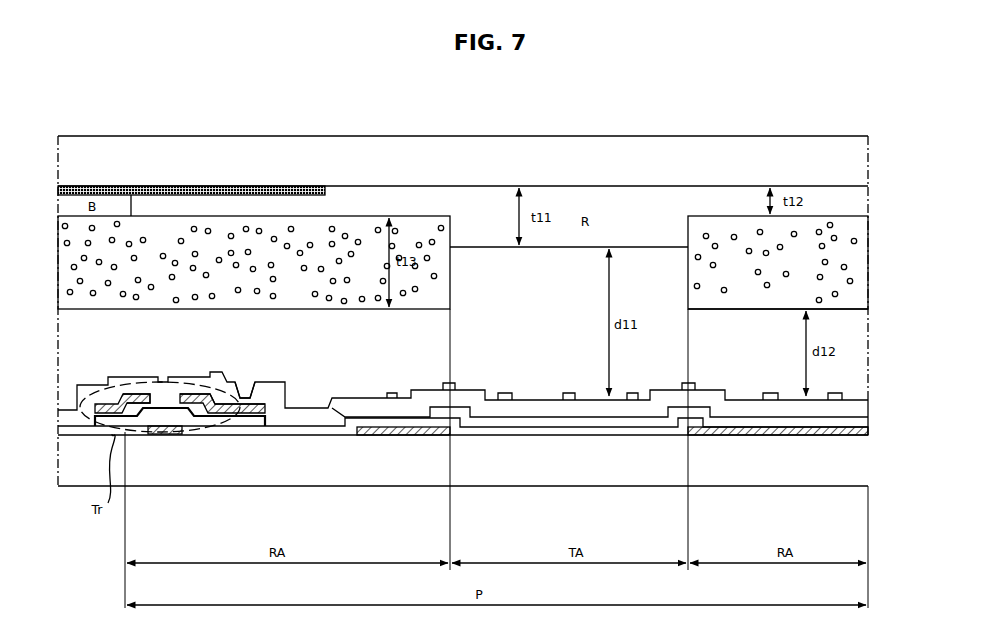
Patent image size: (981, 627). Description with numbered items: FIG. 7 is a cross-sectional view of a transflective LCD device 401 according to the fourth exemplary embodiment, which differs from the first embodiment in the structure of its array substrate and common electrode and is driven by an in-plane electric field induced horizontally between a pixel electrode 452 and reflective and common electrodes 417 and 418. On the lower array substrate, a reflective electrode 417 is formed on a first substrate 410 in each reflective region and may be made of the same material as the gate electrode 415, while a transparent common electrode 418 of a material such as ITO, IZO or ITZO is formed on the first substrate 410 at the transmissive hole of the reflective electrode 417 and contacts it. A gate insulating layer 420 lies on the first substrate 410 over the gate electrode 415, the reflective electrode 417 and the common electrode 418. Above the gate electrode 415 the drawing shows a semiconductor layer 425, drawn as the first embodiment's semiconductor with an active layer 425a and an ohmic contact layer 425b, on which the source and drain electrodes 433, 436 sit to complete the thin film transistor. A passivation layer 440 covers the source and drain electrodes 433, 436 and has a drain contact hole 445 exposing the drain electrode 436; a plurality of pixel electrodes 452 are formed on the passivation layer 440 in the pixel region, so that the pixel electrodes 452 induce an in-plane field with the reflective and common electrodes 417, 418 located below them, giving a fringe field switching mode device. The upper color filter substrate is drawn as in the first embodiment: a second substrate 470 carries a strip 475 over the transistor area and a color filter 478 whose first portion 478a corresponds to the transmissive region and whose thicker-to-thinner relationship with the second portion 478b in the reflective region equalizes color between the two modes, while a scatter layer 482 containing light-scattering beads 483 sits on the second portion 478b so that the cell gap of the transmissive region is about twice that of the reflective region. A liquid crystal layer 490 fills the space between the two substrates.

The LCD device 401 is at (806, 117).
The first substrate 410 is at (853, 470).
The gate electrode 415 is at (166, 436).
The reflective electrode 417 is at (410, 437).
The common electrode 418 is at (514, 437).
The gate insulating layer 420 is at (577, 420).
The semiconductor layer 425 is at (192, 465).
The active layer 425a is at (228, 415).
The ohmic contact layer 425b is at (255, 415).
The source electrode 433 is at (137, 394).
The drain electrode 436 is at (200, 394).
The passivation layer 440 is at (385, 410).
The drain contact hole 445 is at (246, 381).
The pixel electrode 452 is at (282, 380).
The second substrate 470 is at (855, 167).
The black matrix 475 is at (252, 193).
The color filter layer 478 is at (463, 186).
The first color filter pattern 478a is at (572, 198).
The second color filter pattern 478b is at (732, 197).
The reflective region color filter 482 is at (755, 300).
The color filter bottom surface 483 is at (742, 307).
The liquid crystal layer 490 is at (845, 337).